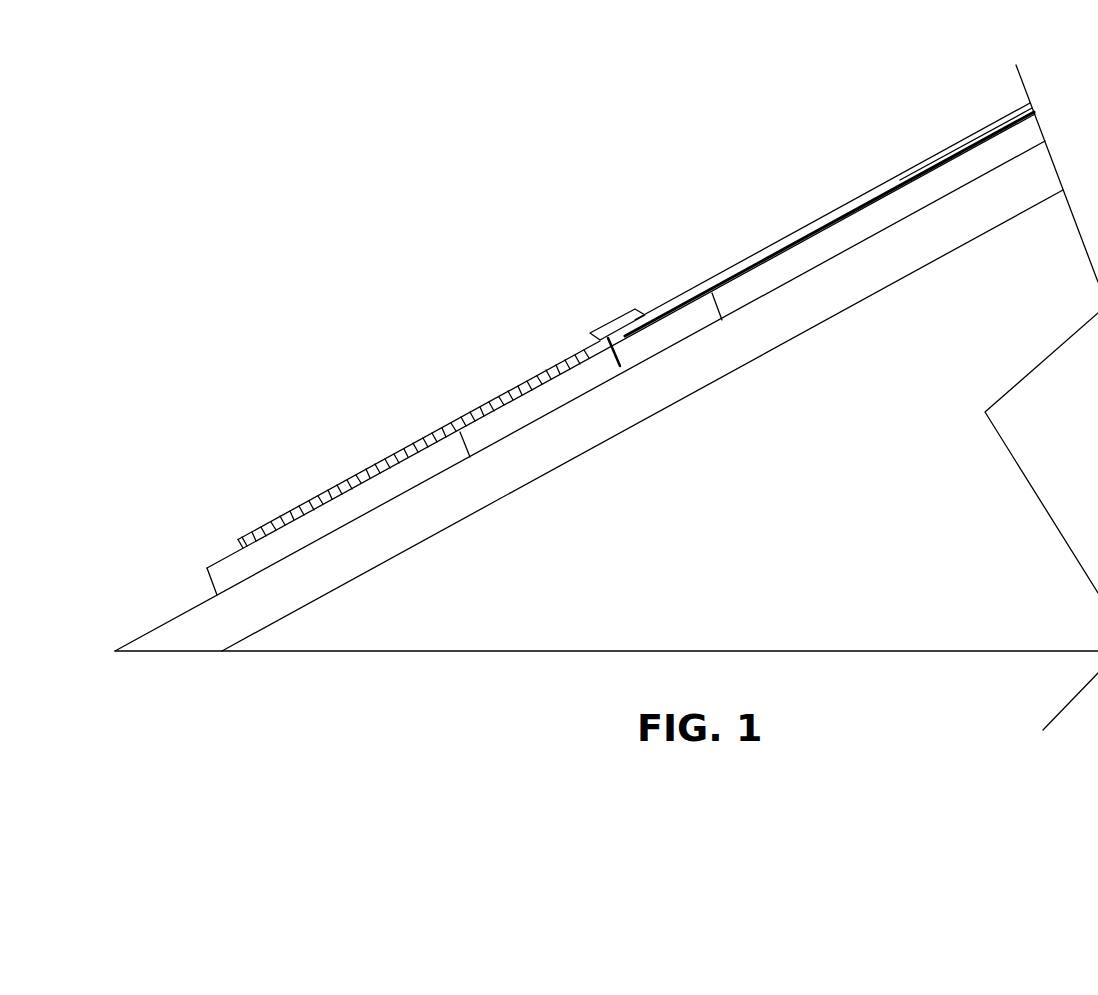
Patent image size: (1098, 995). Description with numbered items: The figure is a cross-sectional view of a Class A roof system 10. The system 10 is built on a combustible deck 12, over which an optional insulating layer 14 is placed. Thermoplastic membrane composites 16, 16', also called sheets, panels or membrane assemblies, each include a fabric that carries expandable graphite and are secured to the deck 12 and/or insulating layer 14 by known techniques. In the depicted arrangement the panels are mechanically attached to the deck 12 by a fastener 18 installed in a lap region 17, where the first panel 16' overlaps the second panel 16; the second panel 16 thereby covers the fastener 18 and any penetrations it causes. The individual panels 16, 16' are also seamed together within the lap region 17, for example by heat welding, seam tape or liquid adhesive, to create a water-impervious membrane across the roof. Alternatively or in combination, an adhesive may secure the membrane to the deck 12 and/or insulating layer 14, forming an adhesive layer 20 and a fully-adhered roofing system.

The roof system 10 is at (250, 322).
The combustible deck 12 is at (235, 622).
The insulating layer 14 is at (232, 554).
The thermoplastic membrane composite 16 is at (419, 444).
The thermoplastic membrane composite 16' is at (829, 219).
The lap region 17 is at (608, 325).
The fastener 18 is at (620, 362).
The adhesive layer 20 is at (842, 218).